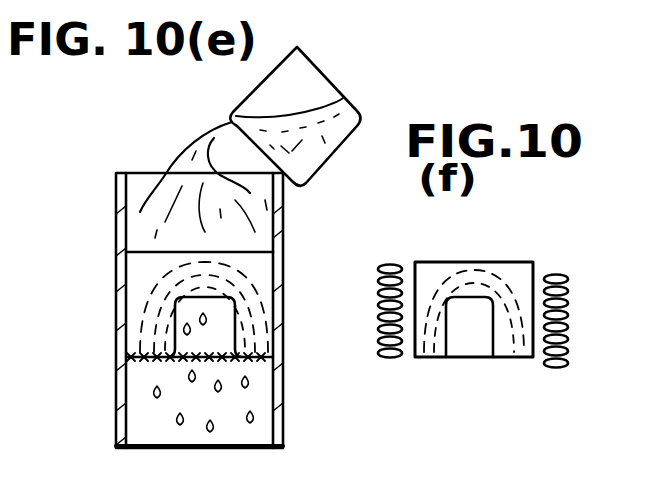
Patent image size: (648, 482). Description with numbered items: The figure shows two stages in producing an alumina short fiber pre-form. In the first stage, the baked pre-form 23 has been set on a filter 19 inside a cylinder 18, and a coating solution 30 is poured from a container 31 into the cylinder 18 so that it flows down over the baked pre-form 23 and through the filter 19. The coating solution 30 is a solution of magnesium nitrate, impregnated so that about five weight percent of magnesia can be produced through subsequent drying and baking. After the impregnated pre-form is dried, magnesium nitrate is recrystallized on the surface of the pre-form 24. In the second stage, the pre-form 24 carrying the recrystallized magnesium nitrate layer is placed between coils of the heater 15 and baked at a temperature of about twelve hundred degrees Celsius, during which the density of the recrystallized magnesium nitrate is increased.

In FIG. 10F, the heater 15 is at (566, 290).
In FIG. 10E, the cylinder 18 is at (284, 225).
In FIG. 10E, the filter 19 is at (278, 360).
In FIG. 10E, the baked pre-form 23 is at (266, 300).
In FIG. 10F, the pre-form 24 is at (492, 272).
In FIG. 10E, the coating solution 30 is at (364, 124).
In FIG. 10E, the container 31 is at (316, 65).